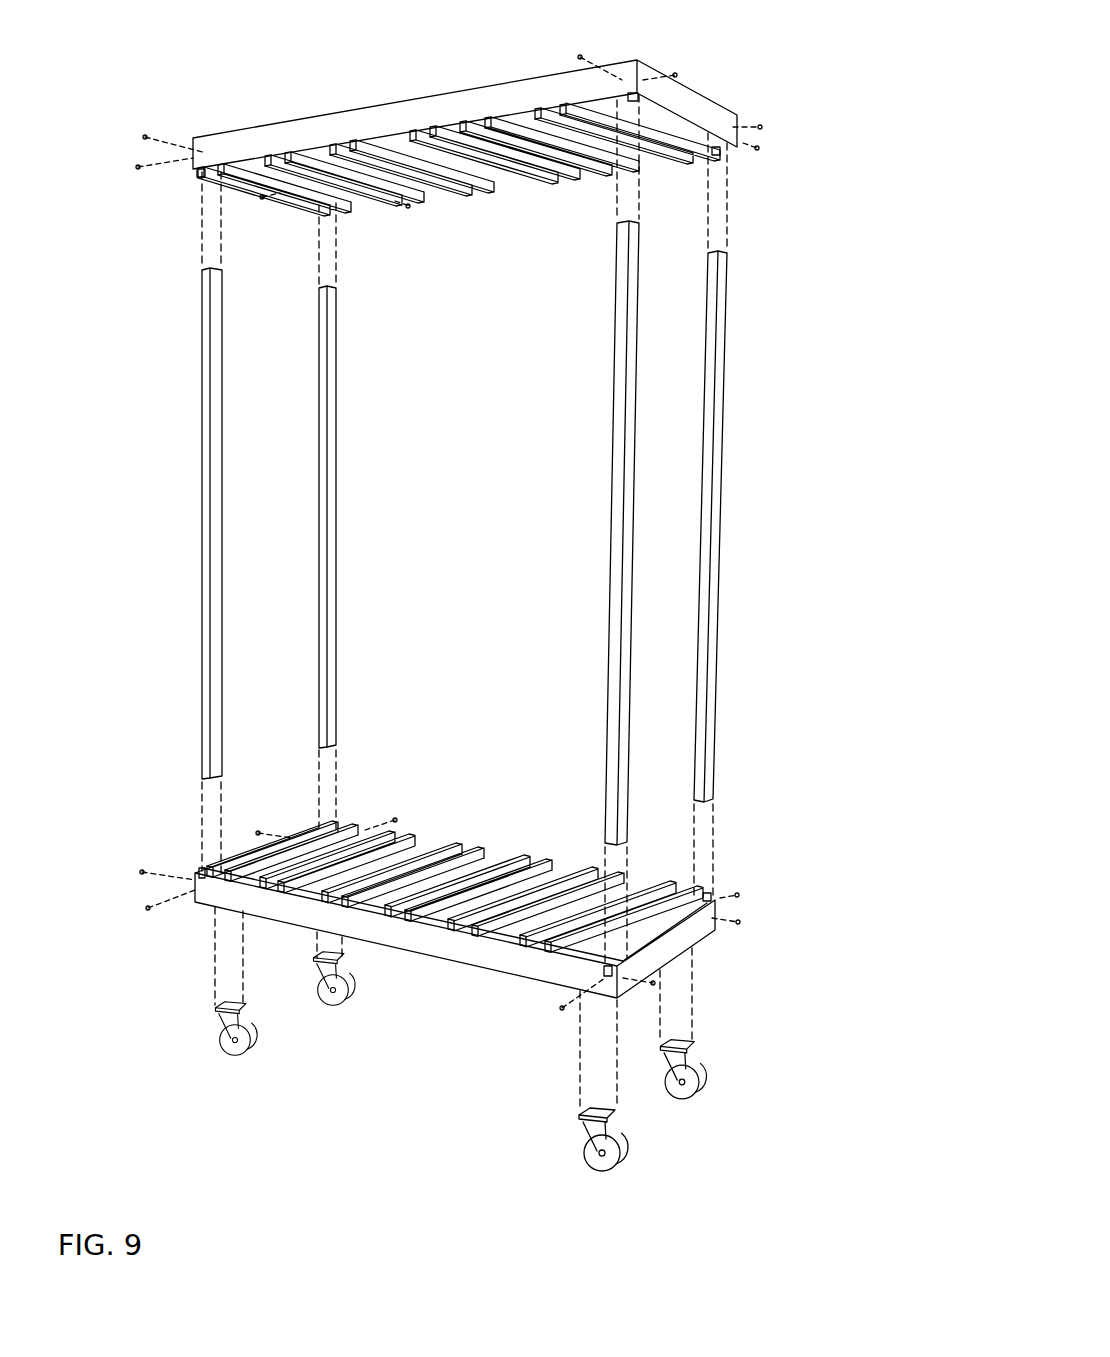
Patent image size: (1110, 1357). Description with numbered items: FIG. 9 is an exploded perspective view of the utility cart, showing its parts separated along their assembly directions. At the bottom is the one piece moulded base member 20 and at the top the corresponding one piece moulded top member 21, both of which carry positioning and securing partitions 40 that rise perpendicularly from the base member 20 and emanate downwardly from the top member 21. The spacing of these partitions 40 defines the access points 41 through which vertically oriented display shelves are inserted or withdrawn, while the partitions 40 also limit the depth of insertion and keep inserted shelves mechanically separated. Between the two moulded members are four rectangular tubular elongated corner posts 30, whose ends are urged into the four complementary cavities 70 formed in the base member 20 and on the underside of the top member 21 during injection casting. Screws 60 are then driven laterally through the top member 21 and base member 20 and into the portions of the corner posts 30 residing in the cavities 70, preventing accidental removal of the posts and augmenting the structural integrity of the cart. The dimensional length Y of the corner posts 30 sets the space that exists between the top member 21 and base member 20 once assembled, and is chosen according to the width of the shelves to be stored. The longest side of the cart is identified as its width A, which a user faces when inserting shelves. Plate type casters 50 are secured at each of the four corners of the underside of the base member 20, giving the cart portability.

The base member 20 is at (218, 902).
The top member 21 is at (450, 112).
The corner posts 30 is at (202, 600).
The positioning and securing partitions 40 is at (538, 117).
The access points 41 is at (257, 165).
The casters 50 is at (222, 1047).
The screws 60 is at (580, 57).
The cavities 70 is at (635, 100).
The width A is at (350, 110).
The dimensional length Y is at (200, 397).